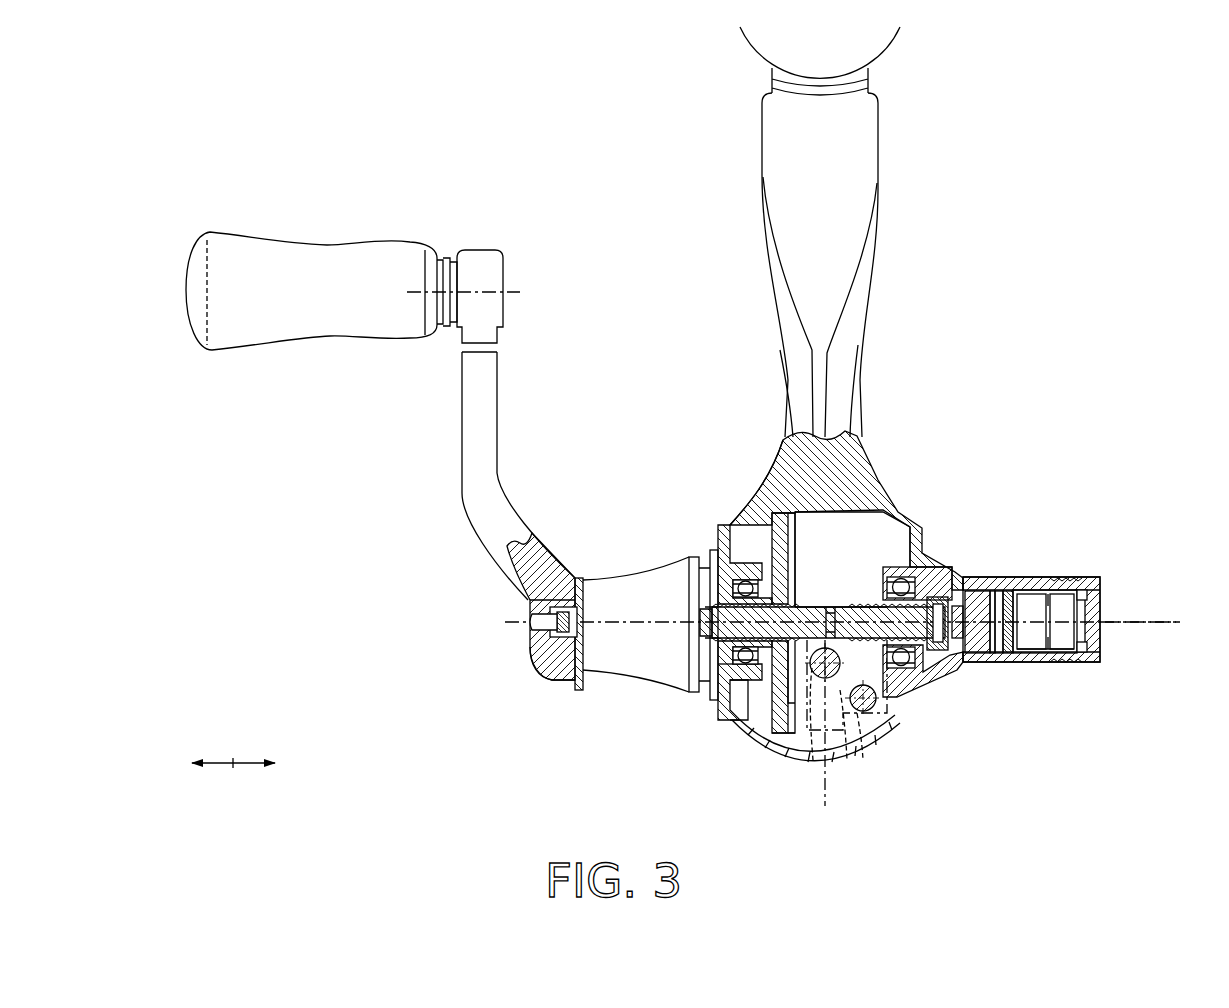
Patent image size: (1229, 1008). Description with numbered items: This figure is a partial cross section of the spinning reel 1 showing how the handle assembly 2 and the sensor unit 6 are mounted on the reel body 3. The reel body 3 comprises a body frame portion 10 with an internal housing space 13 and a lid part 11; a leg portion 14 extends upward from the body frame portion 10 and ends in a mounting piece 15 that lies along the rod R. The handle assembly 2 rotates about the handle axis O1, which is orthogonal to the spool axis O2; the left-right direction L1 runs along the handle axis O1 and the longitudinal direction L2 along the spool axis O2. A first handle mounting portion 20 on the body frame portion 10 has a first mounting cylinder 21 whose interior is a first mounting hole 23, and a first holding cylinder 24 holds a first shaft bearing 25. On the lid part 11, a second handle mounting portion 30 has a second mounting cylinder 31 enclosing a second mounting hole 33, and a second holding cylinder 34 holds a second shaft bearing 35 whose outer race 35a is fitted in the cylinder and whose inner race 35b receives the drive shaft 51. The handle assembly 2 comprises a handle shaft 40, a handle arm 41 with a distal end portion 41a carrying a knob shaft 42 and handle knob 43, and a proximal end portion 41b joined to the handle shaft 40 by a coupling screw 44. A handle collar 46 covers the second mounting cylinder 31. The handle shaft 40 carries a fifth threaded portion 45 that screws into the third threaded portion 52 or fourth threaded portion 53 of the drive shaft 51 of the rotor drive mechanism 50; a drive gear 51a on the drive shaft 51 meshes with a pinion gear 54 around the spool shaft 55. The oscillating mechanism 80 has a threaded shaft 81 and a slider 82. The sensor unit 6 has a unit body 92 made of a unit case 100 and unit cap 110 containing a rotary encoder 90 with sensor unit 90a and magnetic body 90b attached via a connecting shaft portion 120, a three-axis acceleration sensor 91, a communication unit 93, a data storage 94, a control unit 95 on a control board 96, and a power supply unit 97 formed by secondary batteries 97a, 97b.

The spinning reel 1 is at (1016, 160).
The handle assembly 2 is at (504, 238).
The reel body 3 is at (874, 300).
The rod R is at (888, 40).
The sensor unit 6 is at (1073, 525).
The body frame portion 10 is at (792, 446).
The lid part 11 is at (762, 503).
The housing space 13 is at (864, 518).
The leg portion 14 is at (864, 190).
The mounting piece 15 is at (866, 86).
The first handle mounting portion 20 is at (934, 548).
The first mounting cylinder 21 is at (946, 578).
The first mounting hole 23 is at (946, 586).
The first holding cylinder 24 is at (928, 553).
The first shaft bearing 25 is at (881, 574).
The second handle mounting portion 30 is at (713, 544).
The second mounting cylinder 31 is at (692, 560).
The second mounting hole 33 is at (712, 585).
The second holding cylinder 34 is at (740, 565).
The second shaft bearing 35 is at (738, 660).
The outer race 35a is at (758, 728).
The inner race 35b is at (712, 654).
The handle shaft 40 is at (714, 632).
The handle arm 41 is at (498, 485).
The distal end portion 41a is at (498, 276).
The proximal end portion 41b is at (545, 668).
The knob shaft 42 is at (453, 276).
The handle knob 43 is at (328, 255).
The coupling screw 44 is at (558, 640).
The fifth threaded portion 45 is at (712, 598).
The handle collar 46 is at (600, 582).
The rotor drive mechanism 50 is at (738, 742).
The drive shaft 51 is at (816, 605).
The drive gear 51a is at (786, 734).
The third threaded portion 52 is at (862, 605).
The fourth threaded portion 53 is at (710, 612).
The pinion gear 54 is at (860, 712).
The spool shaft 55 is at (822, 680).
The oscillating mechanism 80 is at (853, 725).
The threaded shaft 81 is at (866, 740).
The slider 82 is at (880, 712).
The rotary encoder 90 is at (1042, 770).
The sensor unit 90a is at (974, 654).
The magnetic body 90b is at (956, 642).
The three-axis acceleration sensor 91 is at (992, 653).
The unit body 92 is at (1180, 508).
The communication unit 93 is at (990, 591).
The data storage 94 is at (1015, 653).
The control unit 95 is at (999, 591).
The control board 96 is at (1008, 591).
The power supply unit 97 is at (1170, 625).
The secondary battery 97a is at (1033, 650).
The secondary battery 97b is at (1072, 628).
The unit case 100 is at (1040, 579).
The unit cap 110 is at (1086, 592).
The connecting shaft portion 120 is at (935, 690).
The handle axis O1 is at (1120, 622).
The spool axis O2 is at (821, 737).
The left-right direction L1 is at (222, 765).
The longitudinal direction L2 is at (238, 765).